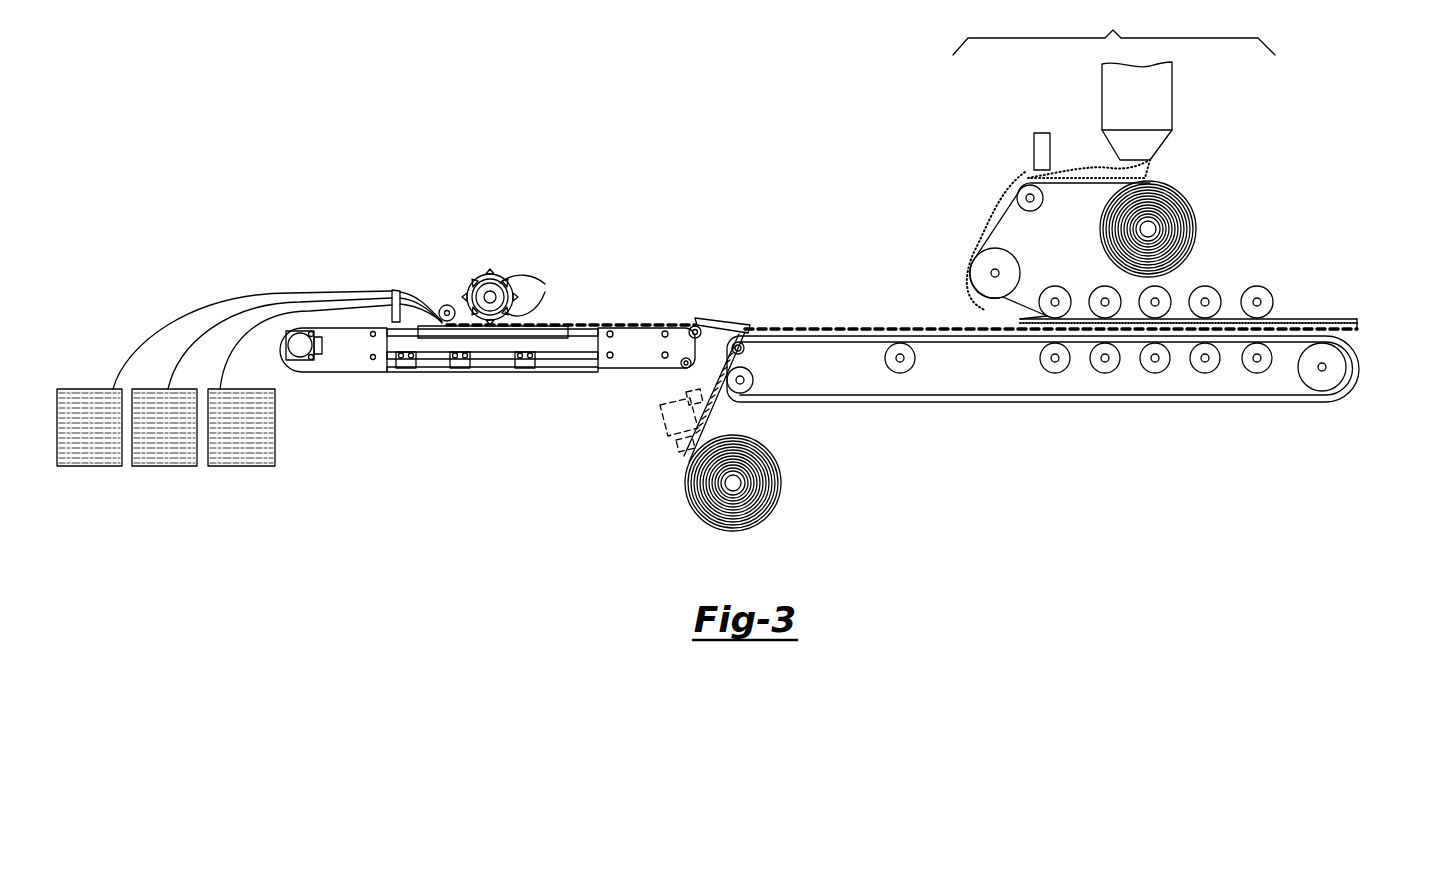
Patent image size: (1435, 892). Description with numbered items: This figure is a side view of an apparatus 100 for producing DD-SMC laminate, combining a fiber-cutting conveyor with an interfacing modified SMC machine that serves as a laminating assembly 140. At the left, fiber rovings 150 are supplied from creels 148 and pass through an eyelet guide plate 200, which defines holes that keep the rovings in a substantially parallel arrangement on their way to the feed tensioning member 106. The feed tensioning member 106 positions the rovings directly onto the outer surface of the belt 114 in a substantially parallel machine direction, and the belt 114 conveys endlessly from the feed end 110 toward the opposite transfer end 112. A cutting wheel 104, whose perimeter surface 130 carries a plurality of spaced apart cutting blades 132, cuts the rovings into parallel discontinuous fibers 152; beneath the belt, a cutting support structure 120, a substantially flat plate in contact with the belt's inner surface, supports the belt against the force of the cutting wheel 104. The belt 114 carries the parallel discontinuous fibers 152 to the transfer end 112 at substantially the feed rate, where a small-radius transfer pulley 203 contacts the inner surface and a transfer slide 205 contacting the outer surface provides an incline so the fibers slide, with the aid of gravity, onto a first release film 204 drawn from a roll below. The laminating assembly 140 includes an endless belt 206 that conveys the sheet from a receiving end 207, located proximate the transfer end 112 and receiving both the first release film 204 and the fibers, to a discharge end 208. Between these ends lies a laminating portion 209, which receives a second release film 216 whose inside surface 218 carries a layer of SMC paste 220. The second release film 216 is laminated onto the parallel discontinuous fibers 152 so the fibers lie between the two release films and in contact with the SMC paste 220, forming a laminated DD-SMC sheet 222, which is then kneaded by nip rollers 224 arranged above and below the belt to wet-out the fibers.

The apparatus 100 is at (236, 163).
The cutting wheel 104 is at (494, 288).
The feed tensioning member 106 is at (446, 305).
The feed end 110 is at (286, 348).
The transfer end 112 is at (694, 324).
The belt 114 is at (390, 370).
The cutting support structure 120 is at (495, 339).
The perimeter surface 130 is at (483, 278).
The cutting blades 132 is at (543, 288).
The laminating assembly 140 is at (894, 284).
The creels 148 is at (213, 466).
The fiber rovings 150 is at (290, 292).
The parallel discontinuous fibers 152 is at (622, 321).
The eyelet guide plate 200 is at (396, 289).
The transfer pulley 203 is at (692, 333).
The first release film 204 is at (688, 468).
The transfer slide 205 is at (726, 317).
The endless belt 206 is at (1015, 345).
The receiving end 207 is at (747, 328).
The discharge end 208 is at (1345, 336).
The laminating portion 209 is at (1114, 157).
The second release film 216 is at (1196, 222).
The inside surface 218 is at (1135, 182).
The SMC paste 220 is at (983, 232).
The laminated DD-SMC sheet 222 is at (1020, 322).
The nip rollers 224 is at (1155, 302).